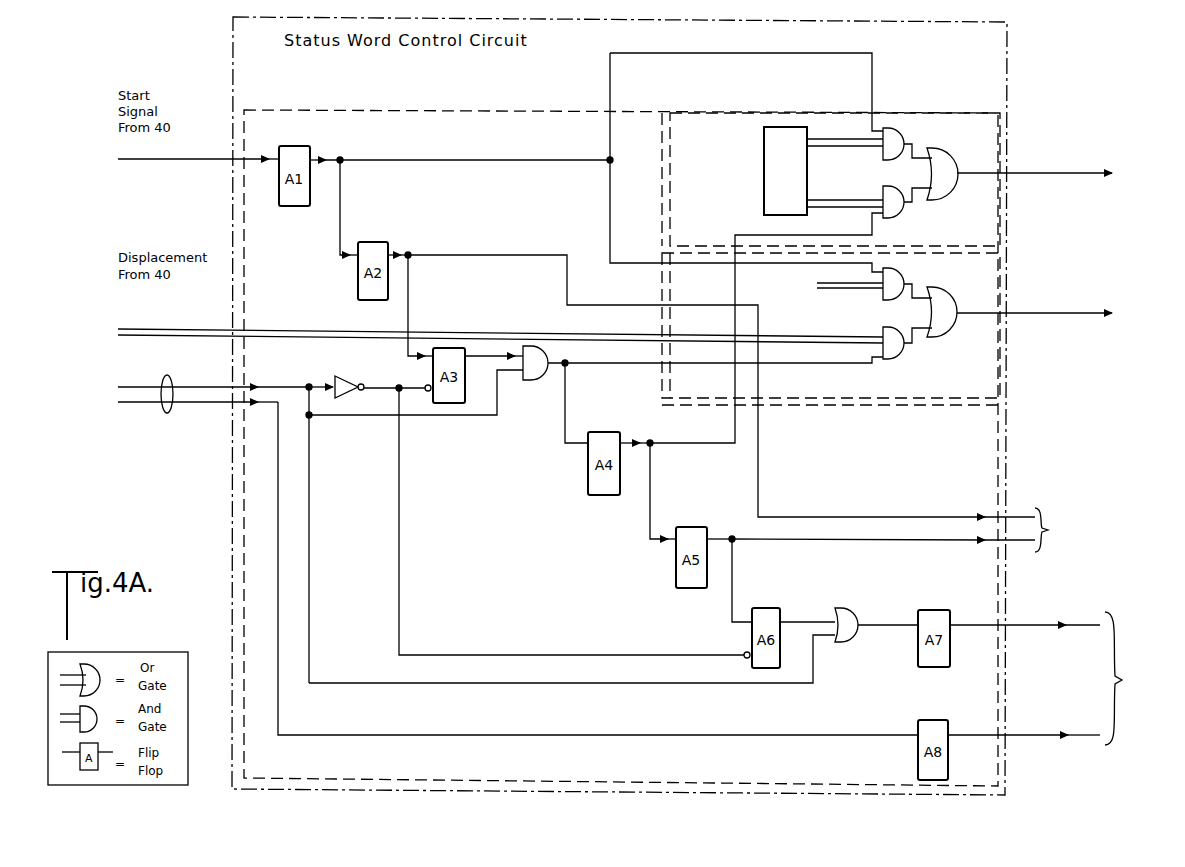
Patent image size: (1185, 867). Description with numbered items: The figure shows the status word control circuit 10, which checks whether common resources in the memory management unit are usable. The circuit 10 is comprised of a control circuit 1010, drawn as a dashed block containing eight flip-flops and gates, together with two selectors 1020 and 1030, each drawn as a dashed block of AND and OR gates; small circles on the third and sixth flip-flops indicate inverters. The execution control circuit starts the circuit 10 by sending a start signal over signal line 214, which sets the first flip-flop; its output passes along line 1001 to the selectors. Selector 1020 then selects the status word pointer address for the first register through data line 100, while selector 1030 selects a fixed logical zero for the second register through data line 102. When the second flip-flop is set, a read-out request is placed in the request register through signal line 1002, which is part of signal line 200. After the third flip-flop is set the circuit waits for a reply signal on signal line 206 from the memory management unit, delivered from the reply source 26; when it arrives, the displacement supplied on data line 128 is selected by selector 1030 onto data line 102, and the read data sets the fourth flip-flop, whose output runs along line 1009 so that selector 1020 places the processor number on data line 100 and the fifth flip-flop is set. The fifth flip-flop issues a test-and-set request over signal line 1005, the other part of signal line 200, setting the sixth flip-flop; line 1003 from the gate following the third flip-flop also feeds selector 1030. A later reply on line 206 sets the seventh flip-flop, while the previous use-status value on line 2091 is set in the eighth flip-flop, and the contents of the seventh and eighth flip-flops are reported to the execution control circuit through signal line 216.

The status word control circuit 10 is at (1010, 40).
The control circuit 1010 is at (432, 108).
The selector 1020 is at (746, 111).
The selector 1030 is at (985, 389).
The start signal line 1001 is at (473, 165).
The signal line 1002 is at (498, 257).
The AND gate output line 1003 is at (608, 370).
The flip-flop A4 output line 1009 is at (708, 442).
The signal line 1005 is at (846, 545).
The data line 100 is at (1080, 170).
The data line 102 is at (1060, 318).
The signal line 200 is at (1048, 530).
The signal line 216 is at (1052, 678).
The reply line to flip-flop A8 2091 is at (823, 735).
The signal line 214 is at (173, 162).
The data line 128 is at (167, 327).
The reply source 26 is at (274, 373).
The signal line 206 is at (165, 413).